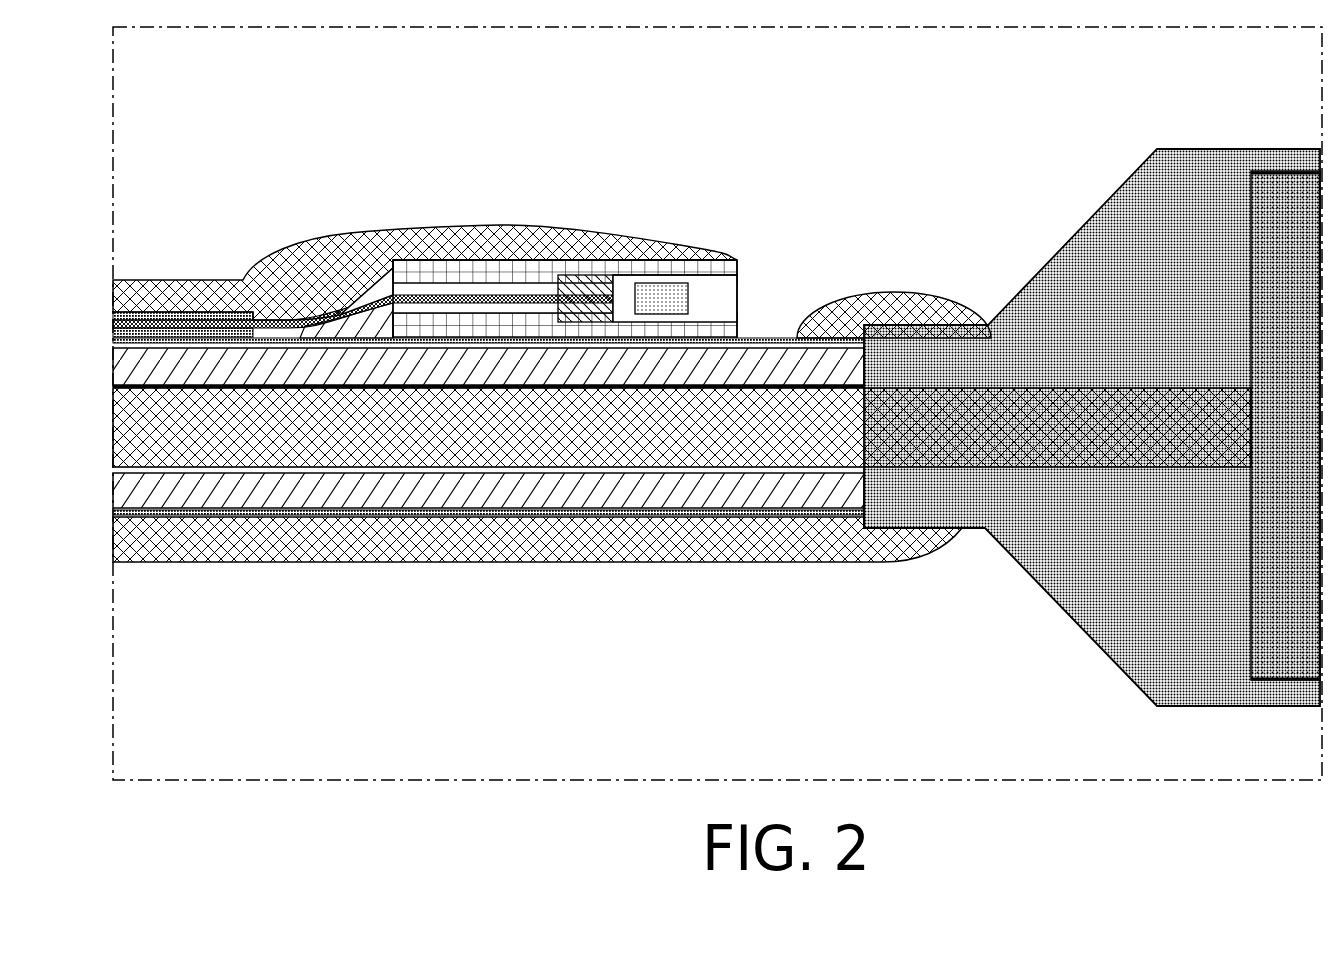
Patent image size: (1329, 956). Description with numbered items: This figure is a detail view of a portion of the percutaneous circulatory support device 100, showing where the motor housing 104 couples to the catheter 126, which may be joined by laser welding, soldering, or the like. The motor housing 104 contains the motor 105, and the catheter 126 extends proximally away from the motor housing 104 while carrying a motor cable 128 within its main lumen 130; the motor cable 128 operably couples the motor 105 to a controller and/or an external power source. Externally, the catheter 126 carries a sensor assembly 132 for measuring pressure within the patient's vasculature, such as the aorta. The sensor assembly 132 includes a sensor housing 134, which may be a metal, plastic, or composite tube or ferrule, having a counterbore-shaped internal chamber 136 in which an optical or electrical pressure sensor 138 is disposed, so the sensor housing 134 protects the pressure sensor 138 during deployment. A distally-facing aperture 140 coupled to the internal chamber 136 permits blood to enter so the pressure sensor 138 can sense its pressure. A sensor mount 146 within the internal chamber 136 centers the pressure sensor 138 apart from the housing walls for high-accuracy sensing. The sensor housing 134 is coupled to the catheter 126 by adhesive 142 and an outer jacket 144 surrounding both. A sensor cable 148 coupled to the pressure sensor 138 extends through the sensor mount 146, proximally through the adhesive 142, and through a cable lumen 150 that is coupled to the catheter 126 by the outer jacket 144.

The device 100 is at (212, 126).
The motor housing 104 is at (1183, 149).
The motor 105 is at (1275, 177).
The catheter 126 is at (850, 347).
The motor cable 128 is at (613, 468).
The main lumen 130 is at (708, 467).
The sensor assembly 132 is at (672, 262).
The sensor housing 134 is at (712, 260).
The internal chamber 136 is at (727, 273).
The pressure sensor 138 is at (655, 292).
The aperture 140 is at (738, 297).
The adhesive 142 is at (355, 292).
The outer jacket 144 is at (420, 228).
The sensor mount 146 is at (573, 276).
The sensor cable 148 is at (273, 315).
The cable lumen 150 is at (187, 313).